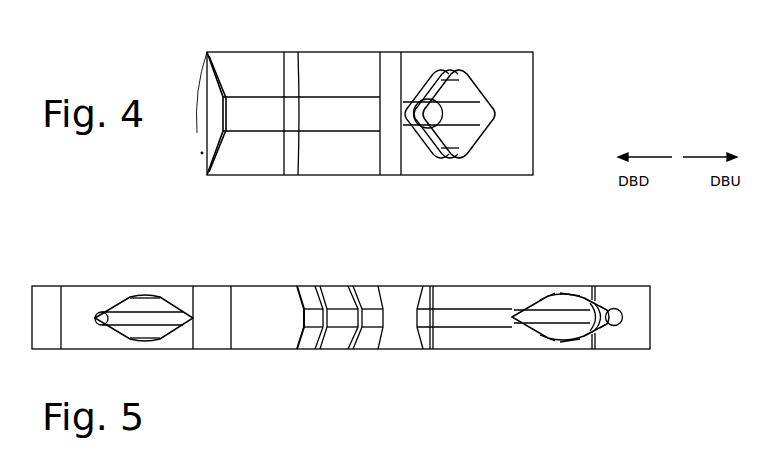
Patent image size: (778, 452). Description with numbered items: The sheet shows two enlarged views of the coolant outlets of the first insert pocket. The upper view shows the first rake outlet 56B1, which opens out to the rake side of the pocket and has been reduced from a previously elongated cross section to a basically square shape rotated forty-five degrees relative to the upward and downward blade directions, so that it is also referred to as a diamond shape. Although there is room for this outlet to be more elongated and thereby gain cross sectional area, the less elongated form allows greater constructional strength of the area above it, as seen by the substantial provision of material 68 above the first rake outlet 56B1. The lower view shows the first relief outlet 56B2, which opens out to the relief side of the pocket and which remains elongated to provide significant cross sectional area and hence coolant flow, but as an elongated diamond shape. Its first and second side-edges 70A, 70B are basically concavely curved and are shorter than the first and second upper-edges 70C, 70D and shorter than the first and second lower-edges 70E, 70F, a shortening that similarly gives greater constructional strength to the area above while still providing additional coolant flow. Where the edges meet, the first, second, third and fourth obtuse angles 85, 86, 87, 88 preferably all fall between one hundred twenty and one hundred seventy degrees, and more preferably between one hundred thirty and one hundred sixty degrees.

In FIG. 4, the first rake outlet 56B1 is at (465, 97).
In FIG. 4, the material 68 is at (503, 148).
In FIG. 5, the first relief outlet 56B2 is at (634, 316).
In FIG. 5, the first side-edge 70A is at (577, 335).
In FIG. 5, the second side-edge 70B is at (573, 297).
In FIG. 5, the first upper-edge 70C is at (605, 335).
In FIG. 5, the second upper-edge 70D is at (617, 310).
In FIG. 5, the first lower-edge 70E is at (540, 337).
In FIG. 5, the second lower-edge 70F is at (528, 298).
In FIG. 5, the first obtuse angle 85 is at (593, 348).
In FIG. 5, the second obtuse angle 86 is at (590, 300).
In FIG. 5, the third obtuse angle 87 is at (550, 338).
In FIG. 5, the fourth obtuse angle 88 is at (552, 300).